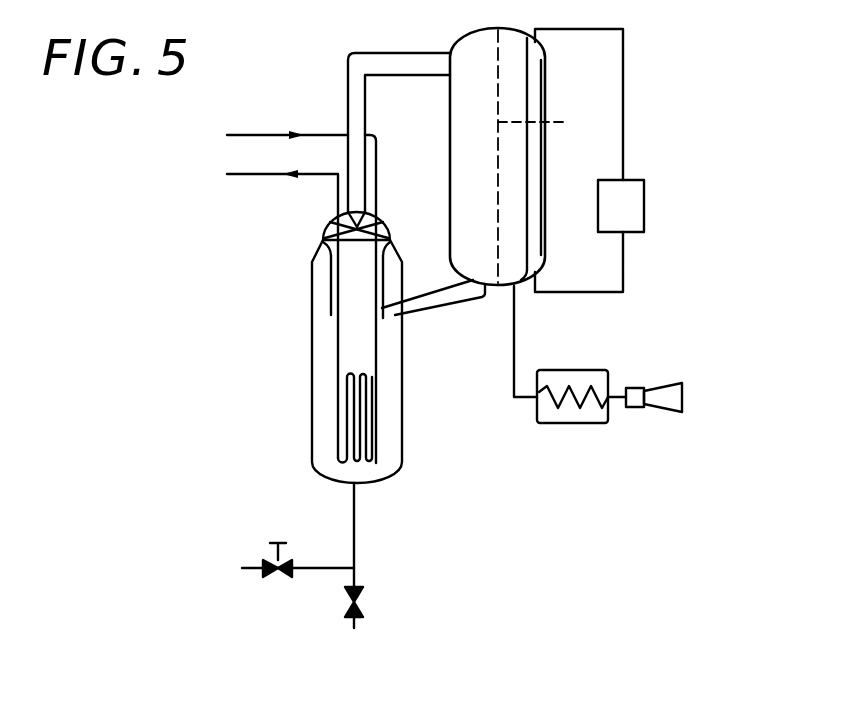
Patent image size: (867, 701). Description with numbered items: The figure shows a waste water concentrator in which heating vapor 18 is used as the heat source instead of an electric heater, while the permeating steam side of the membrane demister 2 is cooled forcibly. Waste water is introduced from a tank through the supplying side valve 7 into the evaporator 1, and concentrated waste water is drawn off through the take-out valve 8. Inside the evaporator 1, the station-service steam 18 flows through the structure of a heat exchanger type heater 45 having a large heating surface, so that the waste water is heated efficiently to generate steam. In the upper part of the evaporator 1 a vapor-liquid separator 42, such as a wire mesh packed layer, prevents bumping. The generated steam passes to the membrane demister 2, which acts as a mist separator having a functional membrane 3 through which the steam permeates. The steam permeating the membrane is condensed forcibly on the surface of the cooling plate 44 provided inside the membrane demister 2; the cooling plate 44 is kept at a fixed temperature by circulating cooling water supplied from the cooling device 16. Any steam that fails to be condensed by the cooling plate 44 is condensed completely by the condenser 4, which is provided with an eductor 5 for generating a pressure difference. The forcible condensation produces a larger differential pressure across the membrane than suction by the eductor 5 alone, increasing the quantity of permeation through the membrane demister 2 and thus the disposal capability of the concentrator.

The evaporator 1 is at (312, 300).
The membrane demister 2 is at (472, 36).
The functional membrane 3 is at (540, 123).
The condenser 4 is at (572, 370).
The eductor 5 is at (665, 383).
The valve 7 is at (283, 578).
The take-out valve 8 is at (365, 598).
The cooling device 16 is at (646, 191).
The heating vapor 18 is at (252, 134).
The vapor-liquid separator 42 is at (384, 232).
The cooling plate 44 is at (527, 157).
The heat exchanger type heater 45 is at (377, 437).